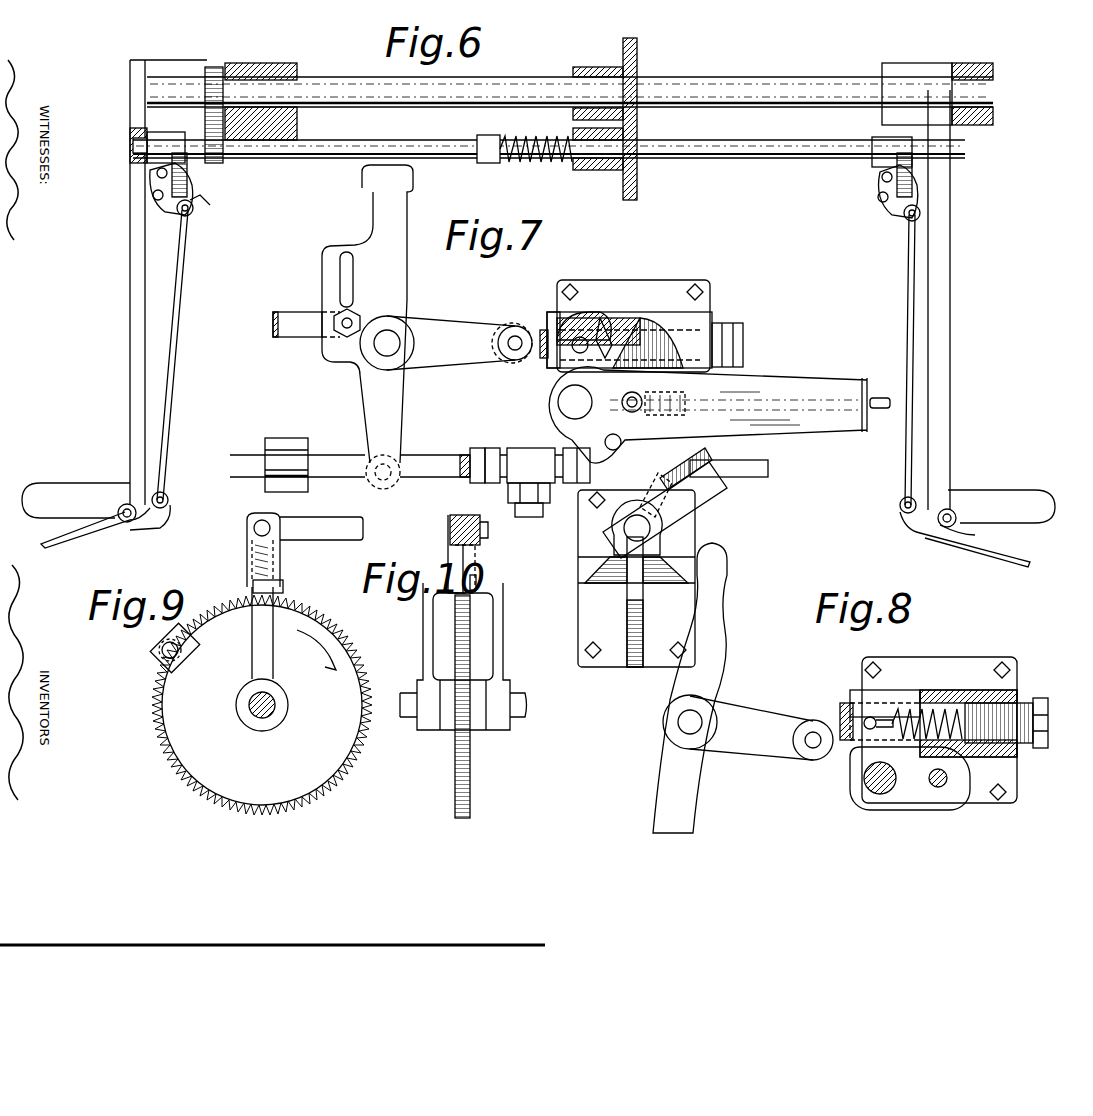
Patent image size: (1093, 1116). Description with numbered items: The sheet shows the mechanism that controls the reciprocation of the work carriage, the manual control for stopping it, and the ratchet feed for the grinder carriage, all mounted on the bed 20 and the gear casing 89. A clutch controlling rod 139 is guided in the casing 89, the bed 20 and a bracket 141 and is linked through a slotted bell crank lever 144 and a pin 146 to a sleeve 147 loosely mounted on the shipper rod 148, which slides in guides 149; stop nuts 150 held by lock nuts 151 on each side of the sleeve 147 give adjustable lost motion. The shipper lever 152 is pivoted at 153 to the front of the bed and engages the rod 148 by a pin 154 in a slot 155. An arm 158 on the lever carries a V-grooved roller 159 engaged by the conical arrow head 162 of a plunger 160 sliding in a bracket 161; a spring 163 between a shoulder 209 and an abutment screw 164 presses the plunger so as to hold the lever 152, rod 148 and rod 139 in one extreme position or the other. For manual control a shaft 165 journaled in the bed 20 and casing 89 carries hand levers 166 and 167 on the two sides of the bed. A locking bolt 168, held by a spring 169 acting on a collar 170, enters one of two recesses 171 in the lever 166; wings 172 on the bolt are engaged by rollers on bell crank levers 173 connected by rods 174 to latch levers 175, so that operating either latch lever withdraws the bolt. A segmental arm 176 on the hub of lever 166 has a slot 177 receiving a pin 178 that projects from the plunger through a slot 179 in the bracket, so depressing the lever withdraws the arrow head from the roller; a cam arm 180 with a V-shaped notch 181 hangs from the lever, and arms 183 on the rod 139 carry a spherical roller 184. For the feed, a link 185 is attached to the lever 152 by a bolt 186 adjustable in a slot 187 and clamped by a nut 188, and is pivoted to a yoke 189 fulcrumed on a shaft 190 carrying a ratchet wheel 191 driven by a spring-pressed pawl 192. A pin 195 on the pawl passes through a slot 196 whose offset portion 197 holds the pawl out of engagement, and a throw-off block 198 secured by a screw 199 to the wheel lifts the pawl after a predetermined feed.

In FIG. 6, the bed 20 is at (638, 184).
In FIG. 6, the gear box or casing 89 is at (977, 122).
In FIG. 7, the clutch controlling rod 139 is at (677, 512).
In FIG. 7, the bracket 141 is at (600, 600).
In FIG. 7, the bell crank lever 144 is at (548, 507).
In FIG. 7, the pin or bolt 146 is at (532, 517).
In FIG. 7, the collar or sleeve 147 is at (527, 457).
In FIG. 7, the shipper rod 148 is at (782, 448).
In FIG. 7, the guides 149 is at (278, 452).
In FIG. 7, the stop nuts 150 is at (493, 448).
In FIG. 7, the lock nuts 151 is at (478, 448).
In FIG. 7, the shipper lever 152 is at (383, 203).
In FIG. 8, the shipper lever 152 is at (715, 647).
In FIG. 7, the pivot 153 is at (383, 347).
In FIG. 8, the pivot 153 is at (687, 722).
In FIG. 7, the pin 154 is at (390, 480).
In FIG. 7, the slot 155 is at (377, 487).
In FIG. 7, the arm 158 is at (457, 332).
In FIG. 8, the arm 158 is at (752, 722).
In FIG. 7, the roller 159 is at (513, 327).
In FIG. 8, the roller 159 is at (812, 722).
In FIG. 7, the plunger 160 is at (629, 340).
In FIG. 8, the plunger 160 is at (933, 690).
In FIG. 6, the bracket 161 is at (273, 163).
In FIG. 7, the bracket 161 is at (663, 297).
In FIG. 8, the bracket 161 is at (980, 670).
In FIG. 7, the arrow head 162 is at (547, 343).
In FIG. 8, the arrow head 162 is at (830, 707).
In FIG. 8, the spring 163 is at (953, 707).
In FIG. 7, the abutment screw 164 is at (733, 328).
In FIG. 8, the abutment screw 164 is at (1037, 707).
In FIG. 6, the shaft 165 is at (708, 83).
In FIG. 7, the shaft 165 is at (572, 402).
In FIG. 8, the shaft 165 is at (873, 789).
In FIG. 6, the hand lever 166 is at (128, 332).
In FIG. 7, the hand lever 166 is at (815, 387).
In FIG. 6, the hand lever 167 is at (945, 305).
In FIG. 6, the locking rod or bolt 168 is at (334, 146).
In FIG. 7, the locking rod or bolt 168 is at (637, 397).
In FIG. 8, the locking rod or bolt 168 is at (937, 788).
In FIG. 6, the spring 169 is at (533, 163).
In FIG. 6, the collar 170 is at (488, 162).
In FIG. 6, the apertures or recesses 171 is at (130, 148).
In FIG. 7, the apertures or recesses 171 is at (618, 440).
In FIG. 6, the wings or segmental flanges 172 is at (198, 227).
In FIG. 7, the wings or segmental flanges 172 is at (640, 335).
In FIG. 6, the bell crank levers 173 is at (170, 205).
In FIG. 6, the rods 174 is at (177, 337).
In FIG. 6, the latch levers 175 is at (152, 523).
In FIG. 6, the segmental arm 176 is at (212, 72).
In FIG. 7, the segmental arm 176 is at (592, 320).
In FIG. 7, the slot 177 is at (607, 333).
In FIG. 7, the pin 178 is at (580, 337).
In FIG. 8, the pin 178 is at (872, 717).
In FIG. 7, the slot 179 is at (553, 327).
In FIG. 8, the slot 179 is at (853, 743).
In FIG. 6, the cam arm 180 is at (208, 265).
In FIG. 7, the cam arm 180 is at (700, 482).
In FIG. 6, the cam notch 181 is at (173, 147).
In FIG. 7, the projecting arms 183 is at (650, 533).
In FIG. 7, the roller 184 is at (697, 498).
In FIG. 7, the link 185 is at (306, 308).
In FIG. 9, the link 185 is at (315, 532).
In FIG. 10, the link 185 is at (467, 515).
In FIG. 7, the bolt 186 is at (345, 325).
In FIG. 7, the slot 187 is at (345, 275).
In FIG. 7, the nut 188 is at (357, 320).
In FIG. 9, the yoke or pawl carrier 189 is at (253, 553).
In FIG. 10, the yoke or pawl carrier 189 is at (428, 652).
In FIG. 9, the shaft 190 is at (262, 717).
In FIG. 10, the shaft 190 is at (513, 713).
In FIG. 9, the ratchet wheel 191 is at (330, 762).
In FIG. 10, the ratchet wheel 191 is at (465, 793).
In FIG. 9, the pawl 192 is at (253, 575).
In FIG. 10, the pawl 192 is at (490, 587).
In FIG. 9, the pin 195 is at (283, 585).
In FIG. 10, the pin 195 is at (470, 593).
In FIG. 10, the slot 196 is at (477, 578).
In FIG. 10, the offset portion 197 is at (460, 583).
In FIG. 9, the throw-off or cam block 198 is at (160, 655).
In FIG. 9, the screw 199 is at (180, 660).
In FIG. 8, the shoulder 209 is at (895, 720).